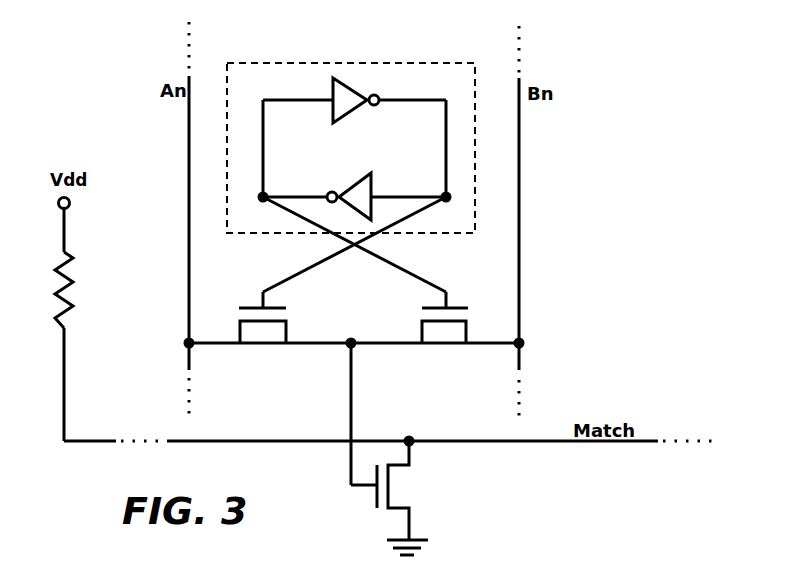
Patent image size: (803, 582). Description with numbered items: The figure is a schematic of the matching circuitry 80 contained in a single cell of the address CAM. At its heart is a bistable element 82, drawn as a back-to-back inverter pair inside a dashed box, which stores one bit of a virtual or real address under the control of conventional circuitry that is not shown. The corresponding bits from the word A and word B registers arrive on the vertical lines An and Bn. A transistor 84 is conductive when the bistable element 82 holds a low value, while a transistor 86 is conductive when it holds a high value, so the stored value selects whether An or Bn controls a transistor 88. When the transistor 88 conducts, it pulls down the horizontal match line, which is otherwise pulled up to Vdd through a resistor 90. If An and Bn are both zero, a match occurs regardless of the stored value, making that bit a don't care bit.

The matching circuitry 80 is at (148, 156).
The bistable element 82 is at (352, 63).
The transistor 84 is at (246, 305).
The transistor 86 is at (458, 305).
The transistor 88 is at (373, 495).
The resistor 90 is at (78, 271).